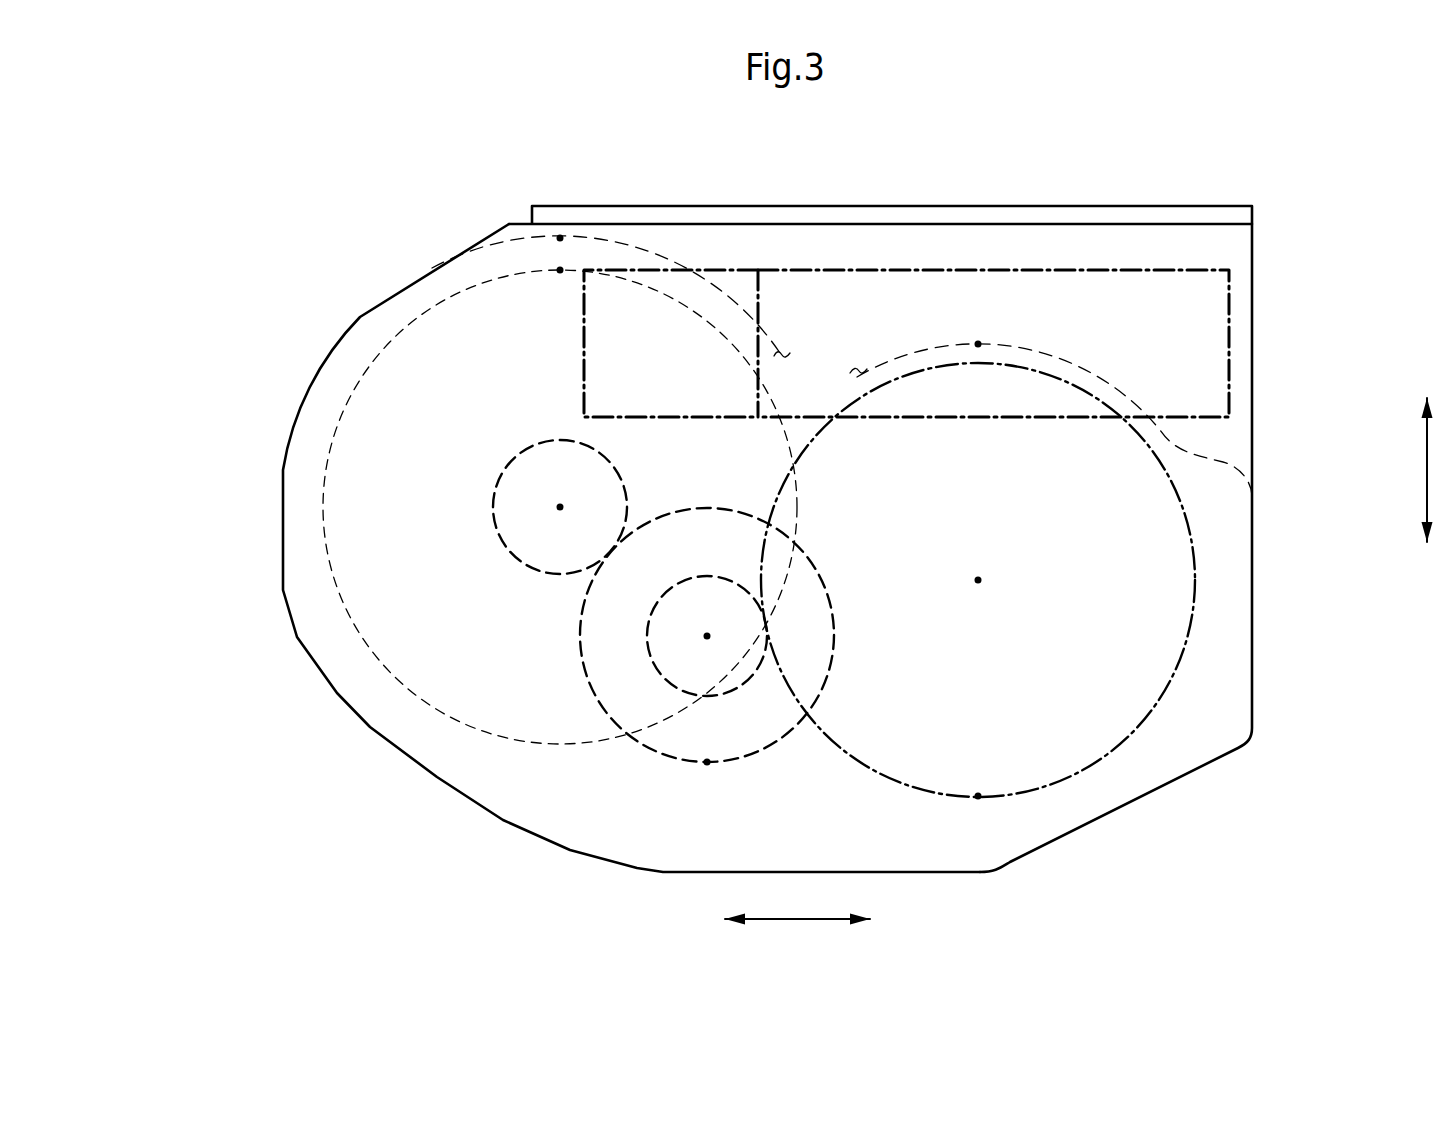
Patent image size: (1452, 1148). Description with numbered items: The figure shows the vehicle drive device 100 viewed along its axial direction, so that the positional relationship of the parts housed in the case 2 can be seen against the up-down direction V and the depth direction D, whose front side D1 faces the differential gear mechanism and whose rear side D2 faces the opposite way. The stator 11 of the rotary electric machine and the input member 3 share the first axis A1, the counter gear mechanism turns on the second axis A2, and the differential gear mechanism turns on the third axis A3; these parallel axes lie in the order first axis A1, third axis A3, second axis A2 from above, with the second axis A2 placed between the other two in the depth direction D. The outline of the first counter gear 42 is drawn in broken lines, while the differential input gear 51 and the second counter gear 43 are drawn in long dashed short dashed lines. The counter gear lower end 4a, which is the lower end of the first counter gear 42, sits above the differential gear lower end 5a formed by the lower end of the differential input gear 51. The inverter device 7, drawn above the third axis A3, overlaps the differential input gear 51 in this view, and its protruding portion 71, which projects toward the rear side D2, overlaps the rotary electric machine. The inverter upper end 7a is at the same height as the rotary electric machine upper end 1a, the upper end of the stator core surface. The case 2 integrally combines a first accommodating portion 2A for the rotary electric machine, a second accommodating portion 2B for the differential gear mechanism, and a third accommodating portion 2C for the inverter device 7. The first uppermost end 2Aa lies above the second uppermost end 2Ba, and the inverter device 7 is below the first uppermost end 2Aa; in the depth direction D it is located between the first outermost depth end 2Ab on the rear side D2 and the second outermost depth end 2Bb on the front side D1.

The vehicle drive device 100 is at (226, 108).
The case 2 is at (1257, 234).
The first accommodating portion 2A is at (622, 245).
The first uppermost end 2Aa is at (560, 236).
The first outermost depth end 2Ab is at (281, 524).
The second accommodating portion 2B is at (1113, 388).
The second uppermost end 2Ba is at (978, 343).
The second outermost depth end 2Bb is at (1258, 610).
The third accommodating portion 2C is at (1062, 212).
The rotary electric machine upper end 1a is at (560, 268).
The stator 11 is at (362, 367).
The inverter device 7 is at (829, 263).
The inverter upper end 7a is at (965, 266).
The protruding portion 71 is at (584, 378).
The input member 3 is at (498, 548).
The first counter gear 42 is at (648, 757).
The second counter gear 43 is at (735, 690).
The counter gear lower end 4a is at (707, 764).
The differential input gear 51 is at (1127, 735).
The differential gear lower end 5a is at (978, 798).
The first axis A1 is at (560, 507).
The second axis A2 is at (707, 636).
The third axis A3 is at (978, 580).
The up-down direction V is at (1438, 470).
The depth direction D is at (796, 931).
The front side D1 is at (893, 919).
The rear side D2 is at (700, 919).